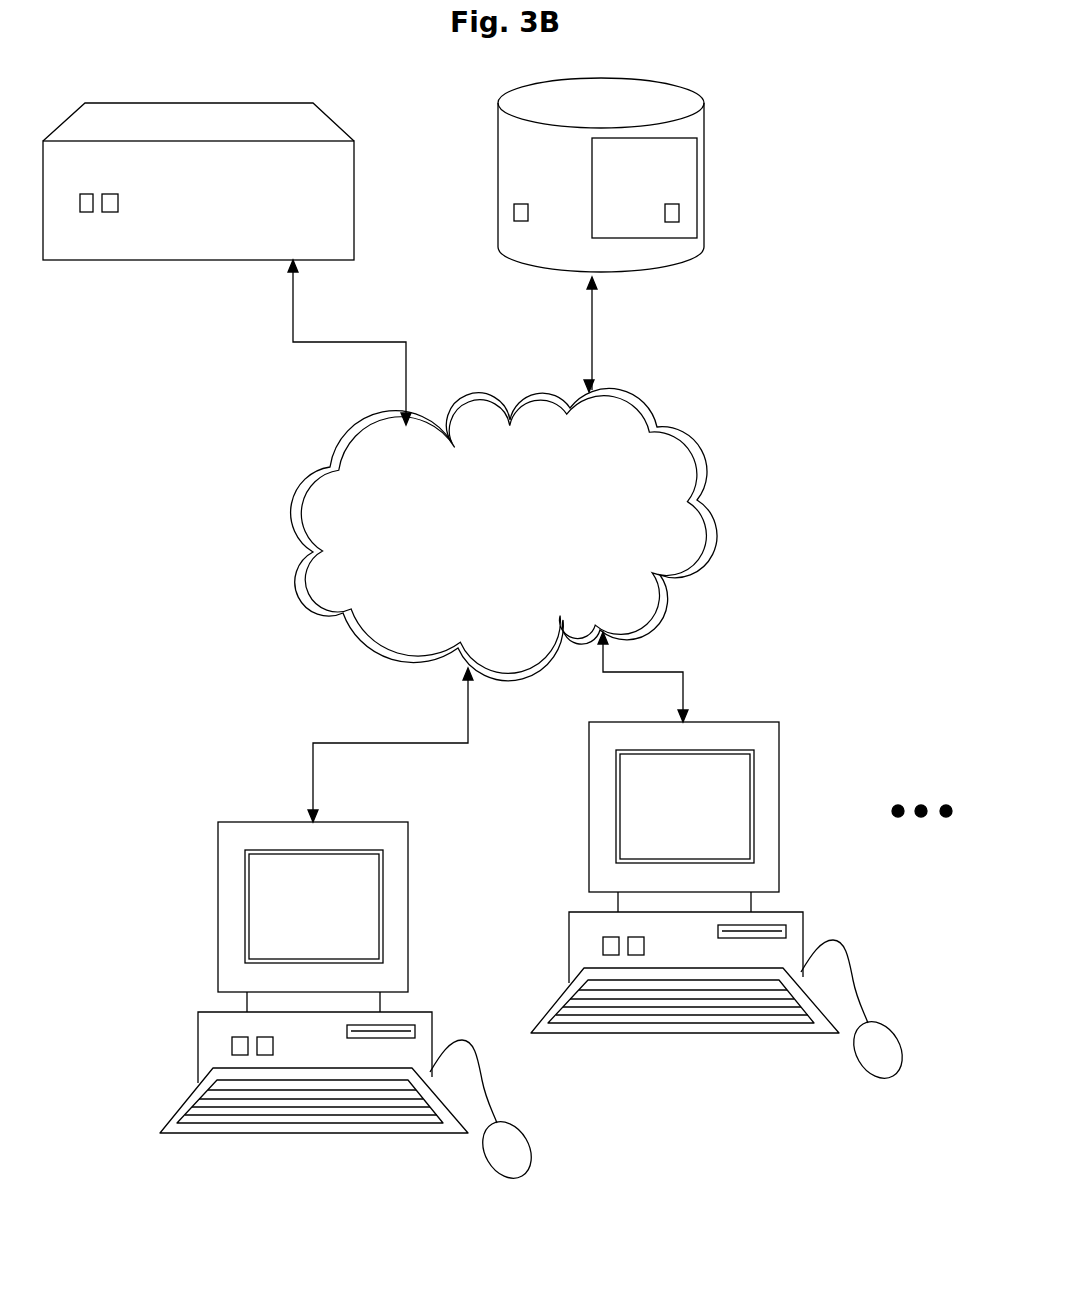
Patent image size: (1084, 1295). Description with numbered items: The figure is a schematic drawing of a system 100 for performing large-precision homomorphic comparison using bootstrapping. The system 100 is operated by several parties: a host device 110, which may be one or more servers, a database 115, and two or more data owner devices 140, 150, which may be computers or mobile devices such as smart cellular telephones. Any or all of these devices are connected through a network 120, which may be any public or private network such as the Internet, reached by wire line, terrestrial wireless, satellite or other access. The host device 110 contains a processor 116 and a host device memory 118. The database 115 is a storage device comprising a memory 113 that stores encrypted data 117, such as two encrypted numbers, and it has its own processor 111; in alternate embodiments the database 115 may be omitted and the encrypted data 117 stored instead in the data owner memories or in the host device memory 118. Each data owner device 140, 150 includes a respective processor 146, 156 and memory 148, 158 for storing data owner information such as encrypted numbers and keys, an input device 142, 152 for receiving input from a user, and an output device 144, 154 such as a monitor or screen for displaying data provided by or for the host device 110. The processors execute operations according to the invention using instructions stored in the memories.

The system 100 is at (793, 266).
The host device 110 is at (217, 131).
The processor 111 is at (514, 212).
The memory 113 is at (658, 183).
The database 115 is at (631, 114).
The processor 116 is at (86, 213).
The encrypted data 117 is at (354, 250).
The host device memory 118 is at (109, 194).
The network 120 is at (504, 534).
The data owner device 140 is at (351, 962).
The input device 142 is at (512, 1123).
The output device 144 is at (353, 901).
The processor 146 is at (232, 1045).
The memory 148 is at (263, 1037).
The data owner device 150 is at (722, 864).
The input device 152 is at (880, 1013).
The output device 154 is at (684, 807).
The processor 156 is at (551, 959).
The memory 158 is at (584, 924).